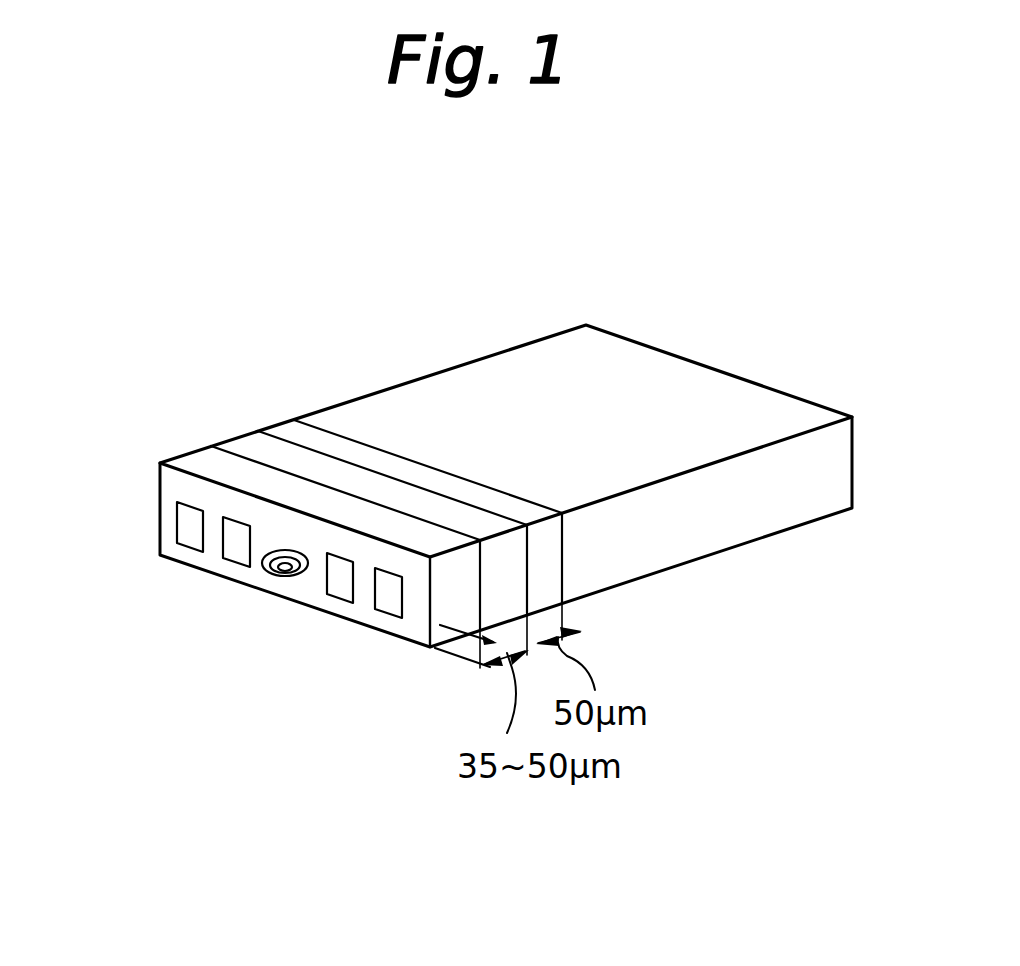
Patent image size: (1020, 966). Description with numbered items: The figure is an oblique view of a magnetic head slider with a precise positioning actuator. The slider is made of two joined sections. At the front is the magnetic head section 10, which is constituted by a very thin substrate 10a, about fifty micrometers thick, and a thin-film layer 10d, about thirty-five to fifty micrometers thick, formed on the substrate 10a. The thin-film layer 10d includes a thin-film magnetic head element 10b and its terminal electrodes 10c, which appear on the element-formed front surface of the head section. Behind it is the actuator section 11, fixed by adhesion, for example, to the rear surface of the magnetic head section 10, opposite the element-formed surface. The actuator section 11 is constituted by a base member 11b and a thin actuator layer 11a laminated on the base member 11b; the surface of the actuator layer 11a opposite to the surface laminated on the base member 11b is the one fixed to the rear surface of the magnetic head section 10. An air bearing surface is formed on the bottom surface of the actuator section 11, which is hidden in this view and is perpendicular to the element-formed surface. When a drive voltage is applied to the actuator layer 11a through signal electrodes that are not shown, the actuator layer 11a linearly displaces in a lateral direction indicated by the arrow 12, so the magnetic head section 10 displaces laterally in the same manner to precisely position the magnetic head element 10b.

The magnetic head section 10 is at (210, 352).
The substrate 10a is at (250, 445).
The thin-film magnetic head element 10b is at (280, 577).
The terminal electrodes 10c is at (240, 548).
The thin-film layer 10d is at (197, 462).
The actuator section 11 is at (442, 270).
The actuator layer 11a is at (292, 440).
The base member 11b is at (460, 402).
The arrow 12 is at (152, 520).